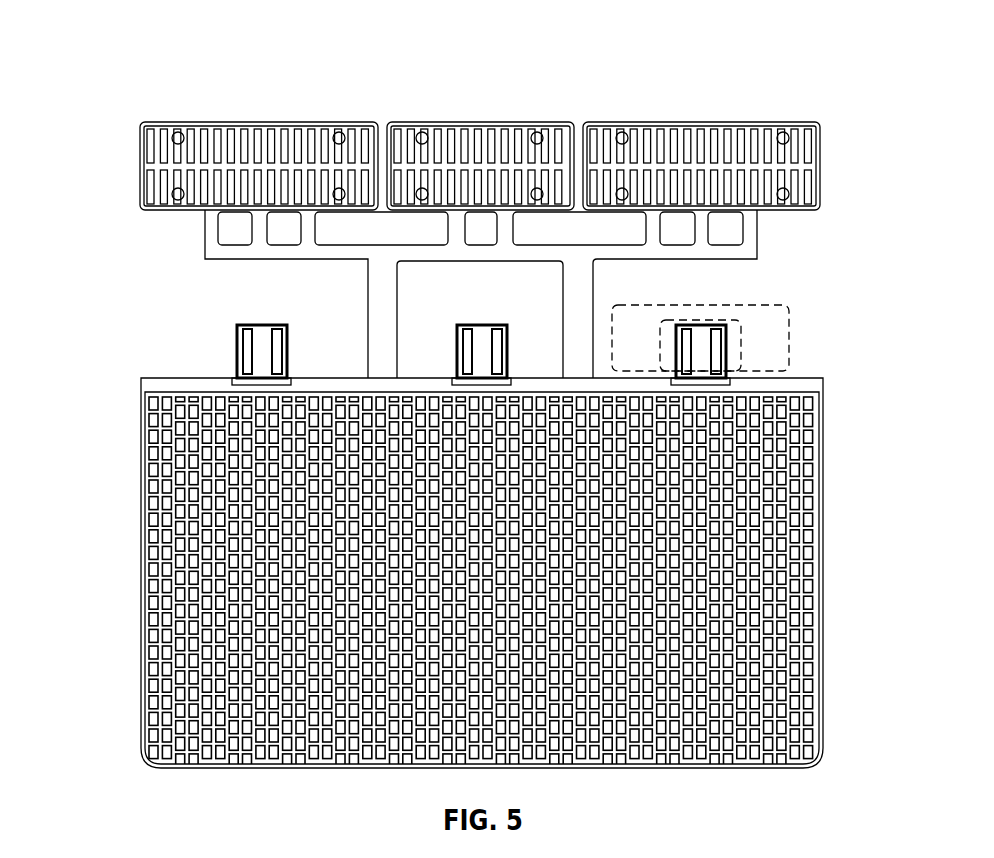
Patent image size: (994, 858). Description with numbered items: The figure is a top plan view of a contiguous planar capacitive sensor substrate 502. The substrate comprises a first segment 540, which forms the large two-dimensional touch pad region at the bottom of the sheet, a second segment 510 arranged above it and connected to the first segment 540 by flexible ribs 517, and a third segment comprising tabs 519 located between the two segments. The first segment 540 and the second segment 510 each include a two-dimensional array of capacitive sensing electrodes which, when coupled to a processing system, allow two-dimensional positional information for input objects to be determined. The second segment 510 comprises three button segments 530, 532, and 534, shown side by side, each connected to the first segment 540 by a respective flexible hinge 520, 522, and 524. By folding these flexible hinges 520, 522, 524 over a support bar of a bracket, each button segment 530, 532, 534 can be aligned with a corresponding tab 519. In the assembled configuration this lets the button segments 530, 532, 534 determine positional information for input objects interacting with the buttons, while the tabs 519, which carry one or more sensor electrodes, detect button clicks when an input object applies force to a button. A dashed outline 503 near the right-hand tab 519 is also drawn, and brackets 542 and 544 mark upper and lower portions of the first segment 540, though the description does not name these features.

The capacitive sensor substrate 502 is at (118, 44).
The optional terminal location 503 is at (789, 325).
The second segment 510 is at (833, 122).
The ribs 517 is at (368, 327).
The tabs 519 is at (247, 352).
The flexible hinge 520 is at (305, 260).
The flexible hinge 522 is at (522, 260).
The flexible hinge 524 is at (660, 260).
The button segment 530 is at (262, 121).
The button segment 532 is at (482, 121).
The button segment 534 is at (703, 121).
The first segment 540 is at (483, 573).
The first panel portion 542 is at (137, 383).
The second panel portion 544 is at (137, 620).